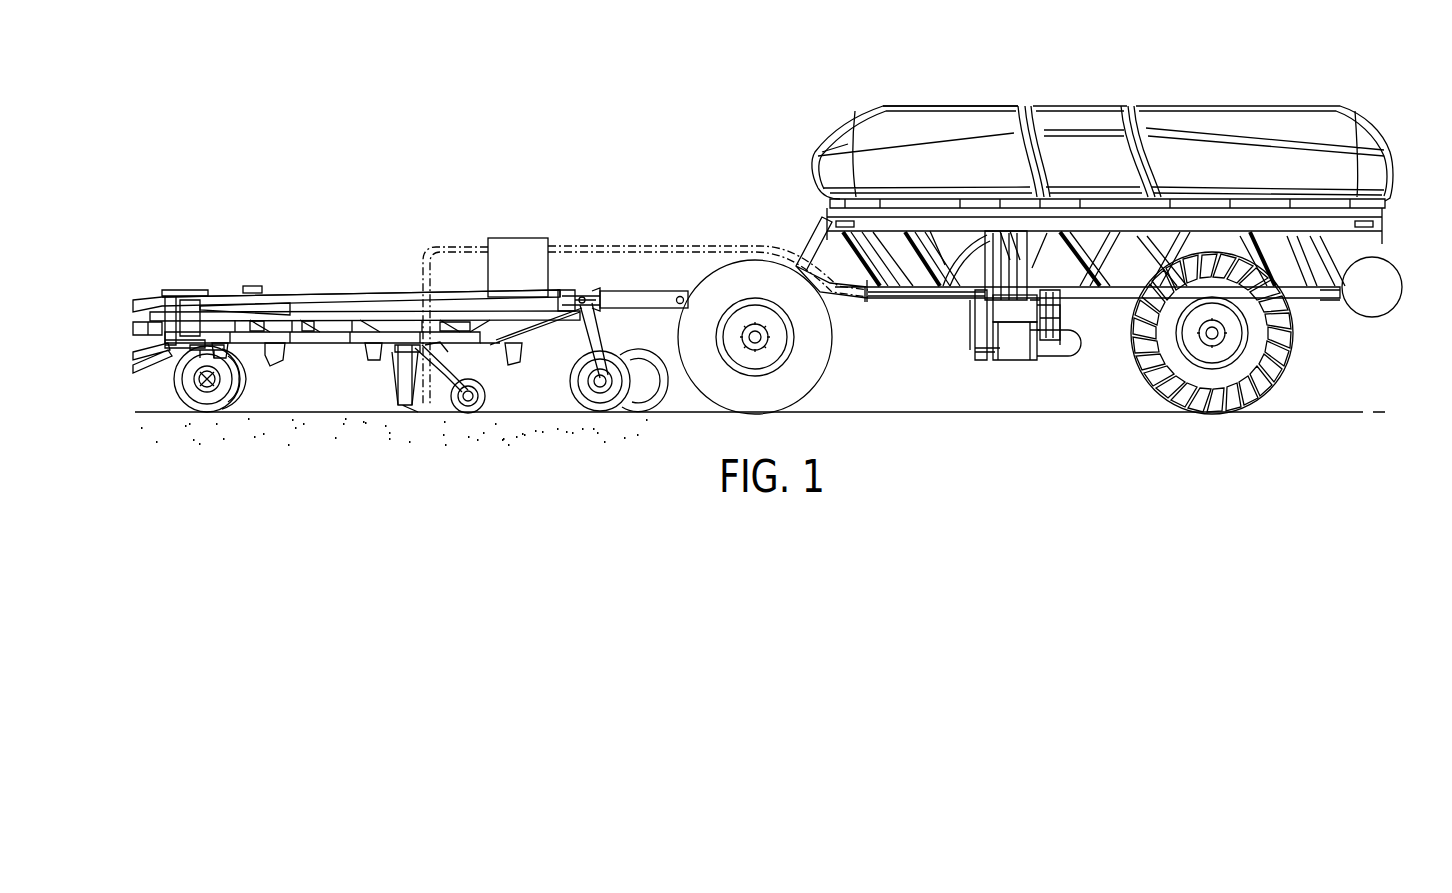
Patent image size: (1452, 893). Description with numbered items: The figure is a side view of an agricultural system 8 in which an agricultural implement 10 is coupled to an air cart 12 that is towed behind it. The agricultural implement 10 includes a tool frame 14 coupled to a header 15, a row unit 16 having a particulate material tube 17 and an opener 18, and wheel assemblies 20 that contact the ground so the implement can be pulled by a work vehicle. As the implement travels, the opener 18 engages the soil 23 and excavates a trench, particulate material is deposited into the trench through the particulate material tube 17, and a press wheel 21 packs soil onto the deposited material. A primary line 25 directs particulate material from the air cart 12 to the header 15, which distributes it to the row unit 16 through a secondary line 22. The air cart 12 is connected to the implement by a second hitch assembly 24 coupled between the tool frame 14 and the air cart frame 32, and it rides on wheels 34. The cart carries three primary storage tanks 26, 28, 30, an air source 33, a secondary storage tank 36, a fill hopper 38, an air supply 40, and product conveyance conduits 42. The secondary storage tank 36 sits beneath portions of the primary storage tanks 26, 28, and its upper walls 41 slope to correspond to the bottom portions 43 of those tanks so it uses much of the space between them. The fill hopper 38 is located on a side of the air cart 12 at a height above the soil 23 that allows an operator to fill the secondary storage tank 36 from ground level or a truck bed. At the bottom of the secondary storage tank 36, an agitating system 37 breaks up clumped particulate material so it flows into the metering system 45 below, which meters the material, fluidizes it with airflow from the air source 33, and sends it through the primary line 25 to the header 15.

The agricultural system 8 is at (585, 83).
The agricultural implement 10 is at (353, 238).
The air cart 12 is at (1105, 58).
The tool frame 14 is at (400, 300).
The header 15 is at (535, 247).
The row unit 16 is at (398, 405).
The particulate material tube 17 is at (432, 392).
The opener 18 is at (412, 413).
The wheel assemblies 20 is at (207, 414).
The press wheel 21 is at (482, 395).
The secondary lines 22 is at (470, 245).
The soil 23 is at (520, 408).
The second hitch assembly 24 is at (585, 298).
The primary line 25 is at (610, 247).
The primary storage tank 26 is at (950, 106).
The primary storage tank 28 is at (1076, 106).
The primary storage tank 30 is at (1248, 106).
The air cart frame 32 is at (1368, 248).
The air source 33 is at (1385, 293).
The wheels 34 is at (812, 362).
The secondary storage tank 36 is at (922, 301).
The agitating system 37 is at (990, 325).
The fill hopper 38 is at (1020, 330).
The air supply 40 is at (1062, 332).
The upper walls 41 is at (1020, 200).
The product conveyance conduits 42 is at (992, 308).
The bottom portions 43 is at (945, 215).
The metering system 45 is at (1040, 355).